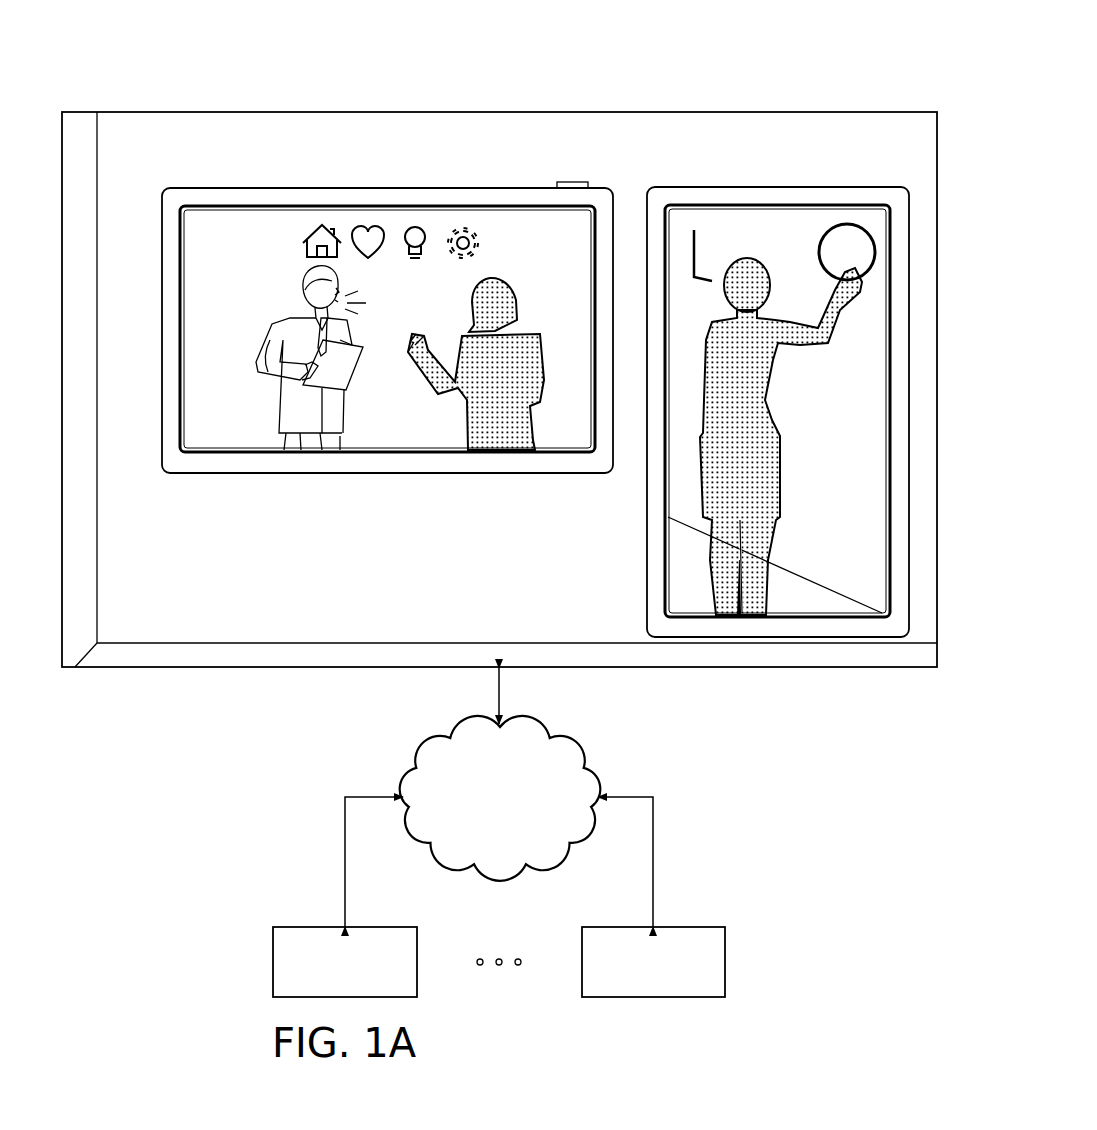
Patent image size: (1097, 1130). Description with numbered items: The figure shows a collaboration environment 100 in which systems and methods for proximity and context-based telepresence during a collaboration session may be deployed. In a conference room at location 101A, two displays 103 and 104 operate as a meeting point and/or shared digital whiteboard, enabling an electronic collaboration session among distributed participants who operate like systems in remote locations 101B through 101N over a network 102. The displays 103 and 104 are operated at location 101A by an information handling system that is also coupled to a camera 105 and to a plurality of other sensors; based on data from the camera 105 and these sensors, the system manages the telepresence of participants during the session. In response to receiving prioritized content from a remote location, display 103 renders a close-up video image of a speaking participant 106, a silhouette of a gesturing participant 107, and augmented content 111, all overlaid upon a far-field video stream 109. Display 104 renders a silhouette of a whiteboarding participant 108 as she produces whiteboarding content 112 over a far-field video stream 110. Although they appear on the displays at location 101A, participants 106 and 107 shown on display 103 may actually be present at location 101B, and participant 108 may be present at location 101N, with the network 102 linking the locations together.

The collaboration environment 100 is at (797, 58).
The location 101A is at (272, 108).
The location 101B is at (313, 977).
The location 101N is at (620, 977).
The network 102 is at (520, 830).
The display 103 is at (158, 356).
The display 104 is at (644, 585).
The camera 105 is at (572, 182).
The speaking participant 106 is at (277, 408).
The gesturing participant 107 is at (465, 410).
The whiteboarding participant 108 is at (776, 409).
The far-field video stream 109 is at (196, 263).
The far-field video stream 110 is at (680, 484).
The augmented content 111 is at (483, 247).
The whiteboarding content 112 is at (822, 253).